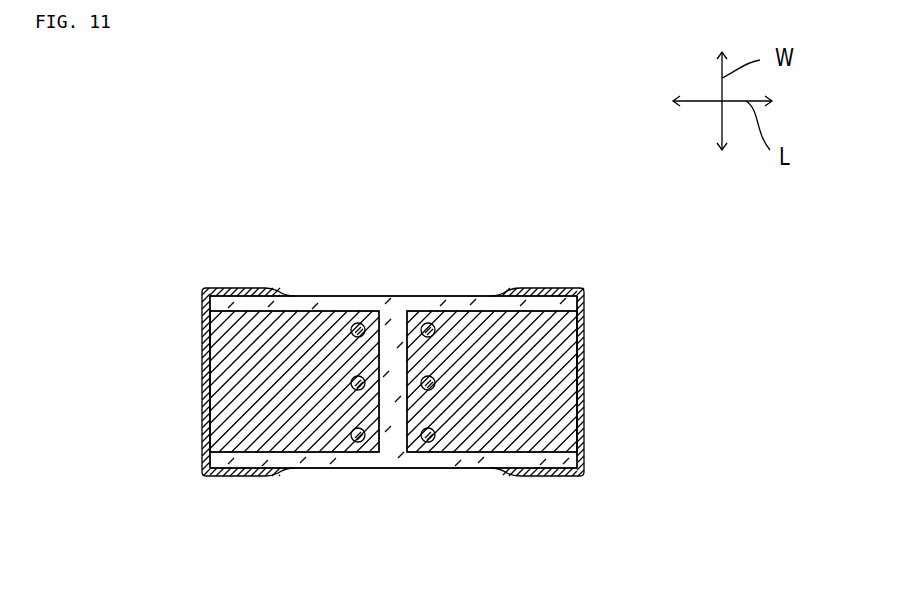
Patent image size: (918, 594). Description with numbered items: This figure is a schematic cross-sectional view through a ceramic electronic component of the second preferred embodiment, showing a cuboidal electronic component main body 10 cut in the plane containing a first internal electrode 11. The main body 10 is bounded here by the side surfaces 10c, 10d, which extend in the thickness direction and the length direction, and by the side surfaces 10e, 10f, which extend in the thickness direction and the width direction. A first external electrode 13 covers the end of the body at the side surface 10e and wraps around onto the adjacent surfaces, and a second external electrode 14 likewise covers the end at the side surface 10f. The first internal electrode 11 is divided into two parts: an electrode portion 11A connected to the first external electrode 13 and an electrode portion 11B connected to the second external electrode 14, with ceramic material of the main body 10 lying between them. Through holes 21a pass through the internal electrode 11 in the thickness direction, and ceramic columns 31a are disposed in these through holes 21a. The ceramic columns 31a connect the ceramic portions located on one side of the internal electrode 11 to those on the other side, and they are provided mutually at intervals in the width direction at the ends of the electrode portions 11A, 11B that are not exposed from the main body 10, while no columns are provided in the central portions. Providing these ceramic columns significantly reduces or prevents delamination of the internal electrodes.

The electronic component main body 10 is at (423, 297).
The side surface 10c is at (338, 296).
The side surface 10d is at (423, 468).
The side surface 10e is at (210, 362).
The side surface 10f is at (584, 325).
The first internal electrode 11 is at (323, 453).
The electrode portion 11A is at (248, 453).
The electrode portion 11B is at (562, 455).
The first external electrode 13 is at (202, 428).
The second external electrode 14 is at (584, 462).
The through hole 21a is at (435, 383).
The ceramic column 31a is at (435, 436).